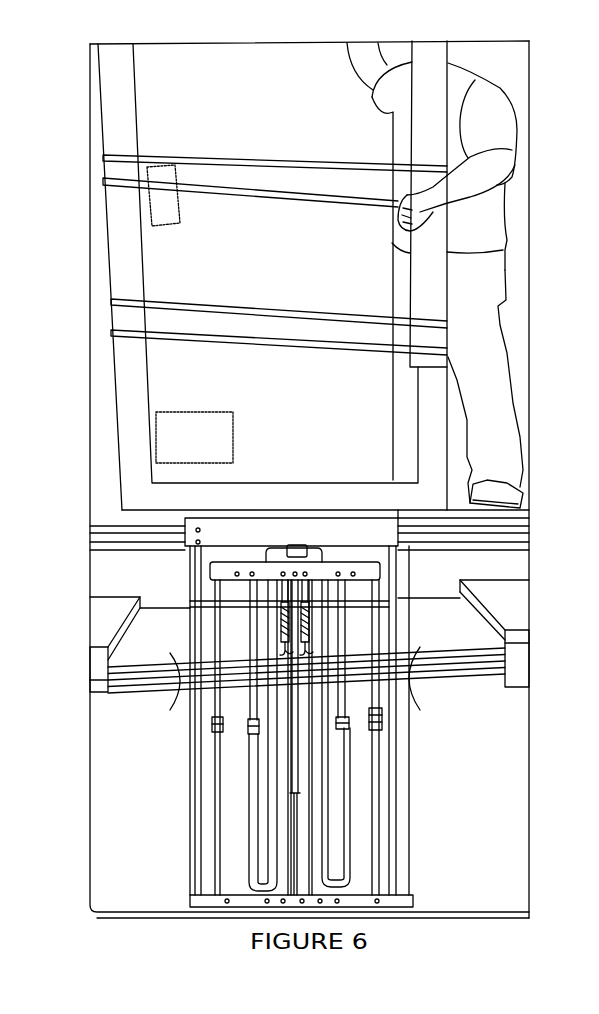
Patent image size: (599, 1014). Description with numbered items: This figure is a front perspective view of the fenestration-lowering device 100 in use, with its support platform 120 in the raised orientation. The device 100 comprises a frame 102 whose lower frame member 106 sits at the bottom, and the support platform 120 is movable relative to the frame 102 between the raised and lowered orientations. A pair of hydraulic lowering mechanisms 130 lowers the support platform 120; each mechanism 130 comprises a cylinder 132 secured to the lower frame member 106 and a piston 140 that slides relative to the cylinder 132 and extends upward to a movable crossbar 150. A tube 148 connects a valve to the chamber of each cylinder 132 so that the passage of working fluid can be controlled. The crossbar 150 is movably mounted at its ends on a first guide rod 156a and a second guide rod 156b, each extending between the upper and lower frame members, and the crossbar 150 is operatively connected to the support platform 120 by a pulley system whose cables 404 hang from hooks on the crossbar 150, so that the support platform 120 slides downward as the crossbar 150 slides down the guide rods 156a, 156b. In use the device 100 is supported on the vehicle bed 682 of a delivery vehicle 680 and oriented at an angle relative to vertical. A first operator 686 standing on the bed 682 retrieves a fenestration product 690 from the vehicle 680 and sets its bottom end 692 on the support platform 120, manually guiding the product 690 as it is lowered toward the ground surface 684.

The fenestration-lowering device 100 is at (121, 810).
The frame 102 is at (190, 833).
The lower frame member 106 is at (327, 900).
The support platform 120 is at (360, 525).
The hydraulic lowering mechanism 130 is at (355, 848).
The cylinder 132 is at (247, 855).
The piston 140 is at (250, 628).
The tube 148 is at (268, 702).
The crossbar 150 is at (370, 574).
The first guide rod 156a is at (220, 780).
The second guide rod 156b is at (397, 690).
The cable 404 is at (297, 820).
The delivery vehicle 680 is at (103, 562).
The vehicle bed 682 is at (100, 513).
The ground surface 684 is at (113, 880).
The first operator 686 is at (488, 218).
The fenestration product 690 is at (130, 377).
The bottom end 692 is at (212, 502).